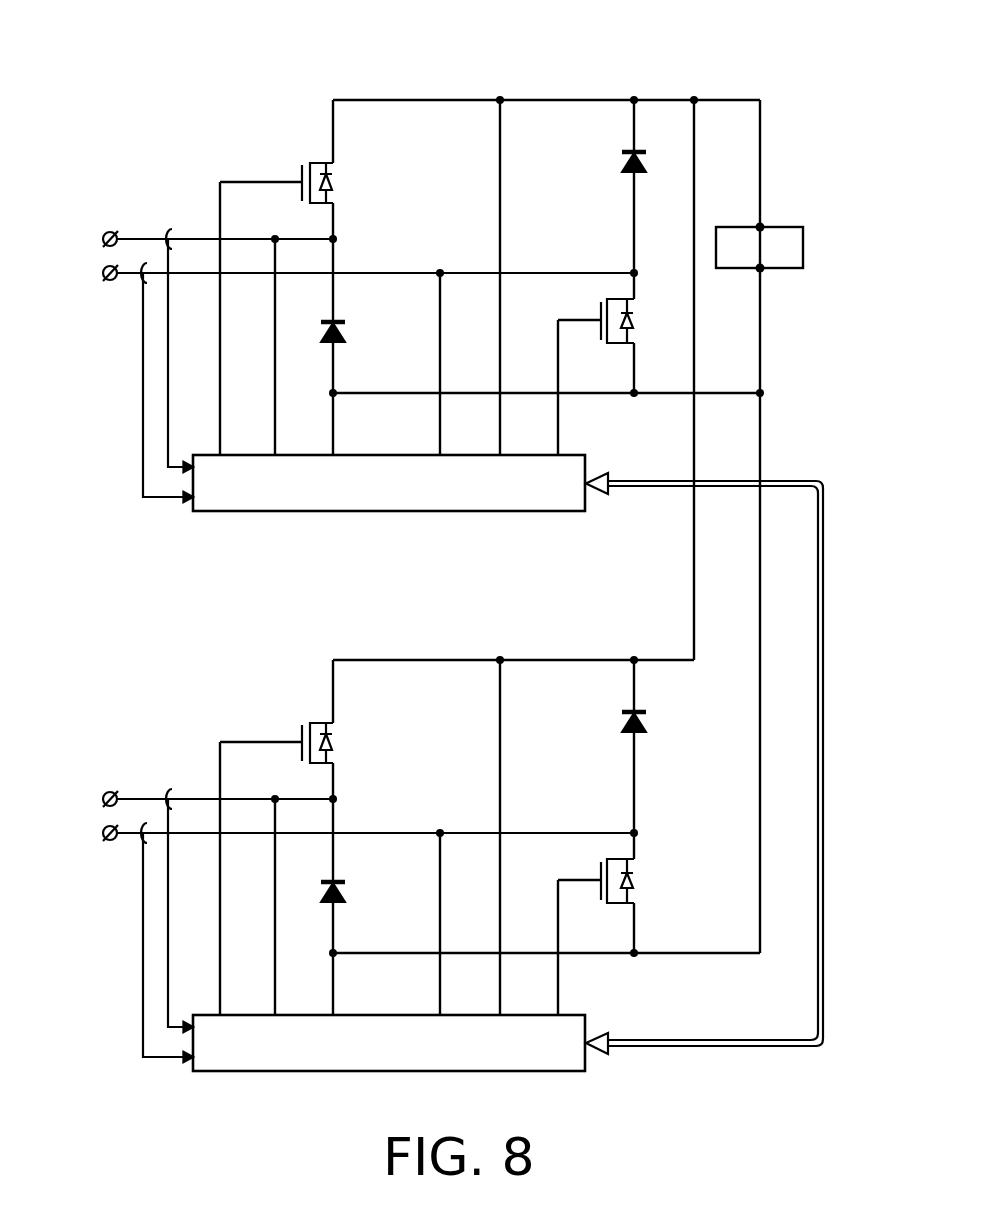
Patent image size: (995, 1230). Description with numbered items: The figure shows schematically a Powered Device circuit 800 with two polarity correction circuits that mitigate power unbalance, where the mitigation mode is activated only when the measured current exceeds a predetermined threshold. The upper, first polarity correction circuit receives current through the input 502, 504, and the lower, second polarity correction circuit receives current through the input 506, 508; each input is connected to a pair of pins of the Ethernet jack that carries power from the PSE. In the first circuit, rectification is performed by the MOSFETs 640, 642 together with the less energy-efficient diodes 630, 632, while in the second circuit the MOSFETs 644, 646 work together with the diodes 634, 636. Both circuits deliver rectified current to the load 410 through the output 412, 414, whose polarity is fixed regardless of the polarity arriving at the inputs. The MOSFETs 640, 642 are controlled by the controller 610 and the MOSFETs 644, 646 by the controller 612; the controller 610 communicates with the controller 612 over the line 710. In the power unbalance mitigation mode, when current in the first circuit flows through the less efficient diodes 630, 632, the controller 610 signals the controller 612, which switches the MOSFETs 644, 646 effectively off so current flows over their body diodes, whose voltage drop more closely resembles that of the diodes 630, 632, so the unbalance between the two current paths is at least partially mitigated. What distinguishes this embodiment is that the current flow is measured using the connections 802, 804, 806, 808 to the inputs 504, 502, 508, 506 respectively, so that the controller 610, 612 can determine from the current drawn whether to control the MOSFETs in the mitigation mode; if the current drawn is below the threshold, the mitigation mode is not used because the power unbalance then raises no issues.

The powered device circuit 800 is at (108, 96).
The MOSFET 642 is at (313, 162).
The diode 630 is at (620, 160).
The diode 632 is at (348, 330).
The MOSFET 640 is at (598, 315).
The load 410 is at (805, 247).
The output 412 is at (765, 227).
The output 414 is at (765, 268).
The input 502 is at (103, 240).
The input 504 is at (103, 275).
The connection 802 is at (143, 355).
The connection 804 is at (168, 405).
The controller 610 is at (272, 512).
The communication line 710 is at (820, 482).
The MOSFET 646 is at (297, 715).
The diode 634 is at (593, 716).
The diode 636 is at (377, 890).
The MOSFET 644 is at (574, 875).
The input 506 is at (177, 800).
The input 508 is at (328, 835).
The connection 806 is at (127, 948).
The connection 808 is at (133, 916).
The controller 612 is at (389, 1077).